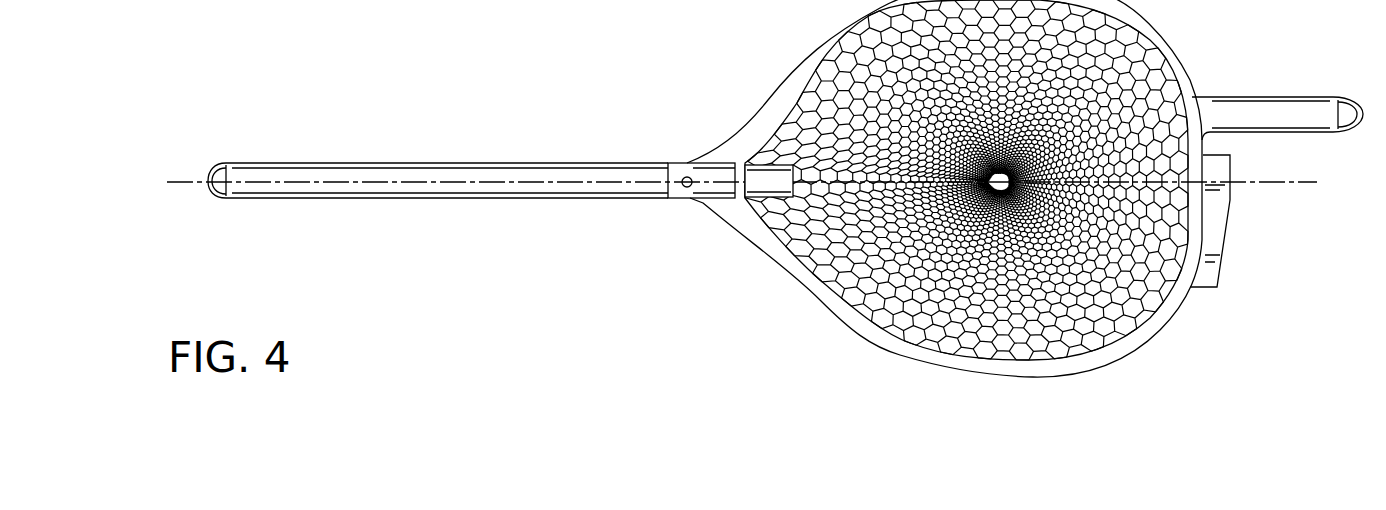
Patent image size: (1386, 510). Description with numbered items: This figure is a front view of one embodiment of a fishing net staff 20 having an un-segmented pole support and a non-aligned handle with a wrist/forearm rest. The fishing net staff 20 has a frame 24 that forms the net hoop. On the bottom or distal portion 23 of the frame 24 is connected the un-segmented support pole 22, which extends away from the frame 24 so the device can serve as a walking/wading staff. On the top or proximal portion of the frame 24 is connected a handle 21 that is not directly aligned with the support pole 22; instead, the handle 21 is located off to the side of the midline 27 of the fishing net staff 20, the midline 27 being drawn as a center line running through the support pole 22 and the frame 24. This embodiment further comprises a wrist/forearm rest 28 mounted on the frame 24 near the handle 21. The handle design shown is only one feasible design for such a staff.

The fishing net staff 20 is at (768, 55).
The handle 21 is at (1258, 97).
The un-segmented support pole 22 is at (430, 196).
The distal portion 23 is at (742, 233).
The frame 24 is at (870, 348).
The midline 27 is at (187, 180).
The wrist/forearm rest 28 is at (1217, 268).